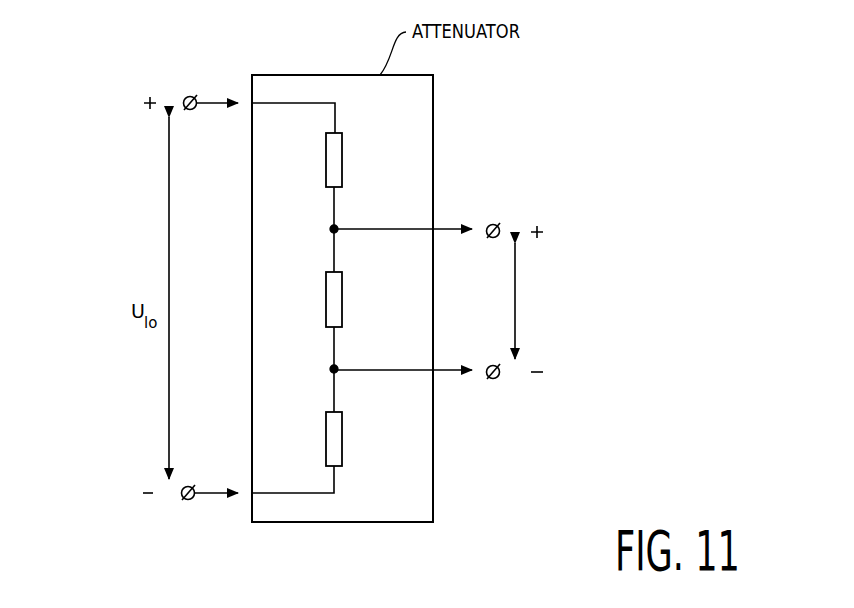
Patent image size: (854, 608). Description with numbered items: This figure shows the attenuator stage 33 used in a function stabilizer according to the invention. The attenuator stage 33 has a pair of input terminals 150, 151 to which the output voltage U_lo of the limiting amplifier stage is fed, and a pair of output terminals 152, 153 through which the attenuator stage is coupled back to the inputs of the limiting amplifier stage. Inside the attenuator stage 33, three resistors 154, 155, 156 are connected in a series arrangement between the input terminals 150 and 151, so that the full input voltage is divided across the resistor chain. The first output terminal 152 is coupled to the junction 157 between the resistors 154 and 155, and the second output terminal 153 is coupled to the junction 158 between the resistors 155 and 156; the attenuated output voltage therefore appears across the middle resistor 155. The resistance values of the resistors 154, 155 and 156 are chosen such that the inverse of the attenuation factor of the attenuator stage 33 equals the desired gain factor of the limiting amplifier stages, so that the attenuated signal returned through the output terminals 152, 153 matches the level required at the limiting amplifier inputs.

The attenuator stage 33 is at (433, 118).
The input terminal 150 is at (195, 96).
The input terminal 151 is at (192, 500).
The output terminal 152 is at (494, 223).
The output terminal 153 is at (494, 380).
The resistor 154 is at (343, 166).
The resistor 155 is at (343, 302).
The resistor 156 is at (343, 442).
The junction 157 is at (330, 229).
The junction 158 is at (330, 369).